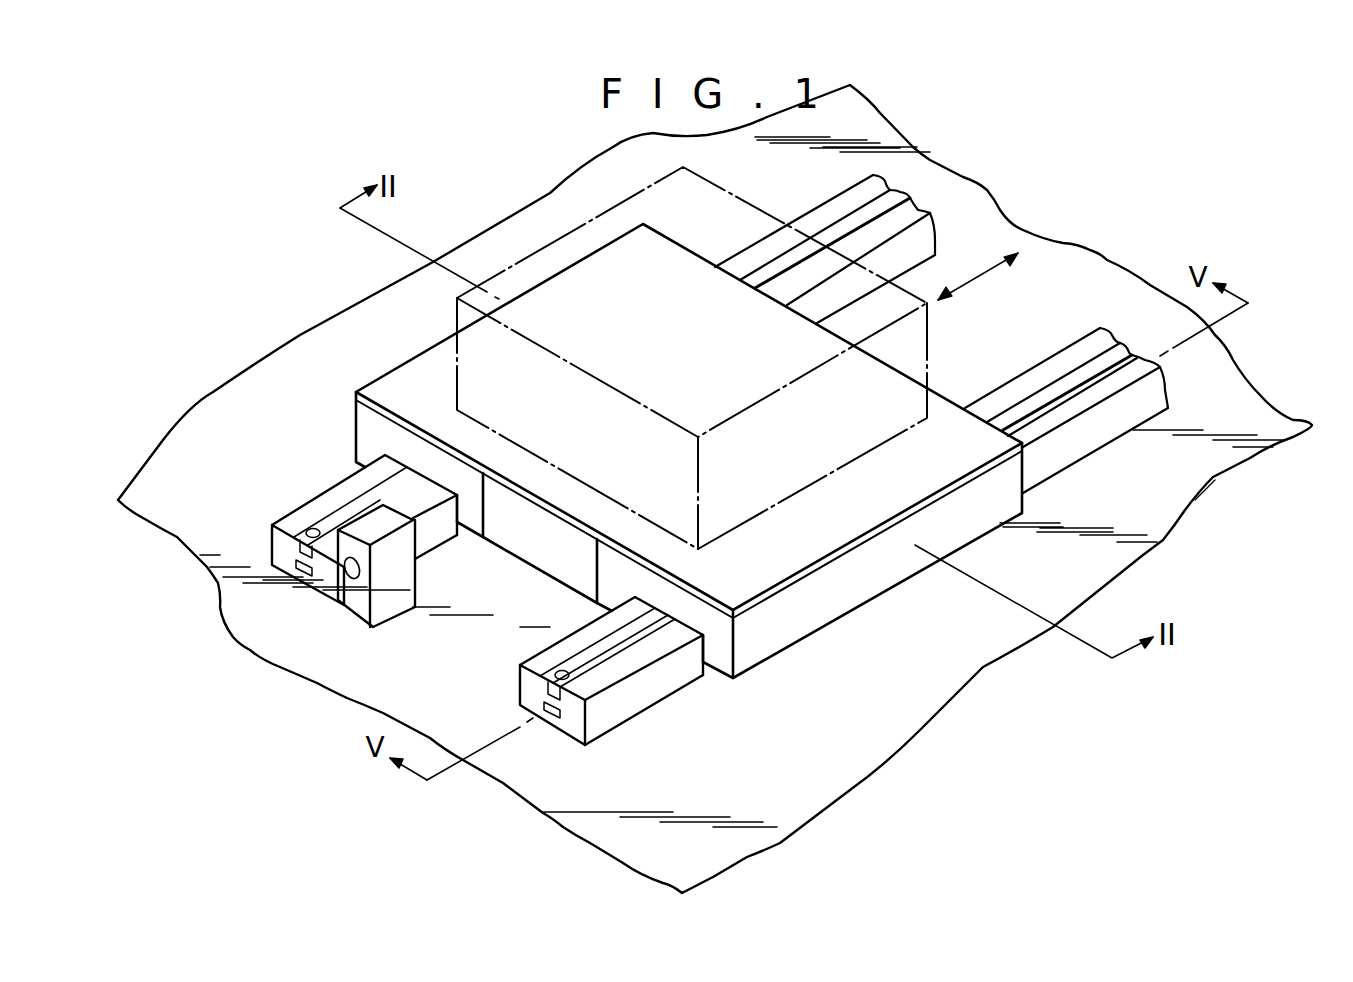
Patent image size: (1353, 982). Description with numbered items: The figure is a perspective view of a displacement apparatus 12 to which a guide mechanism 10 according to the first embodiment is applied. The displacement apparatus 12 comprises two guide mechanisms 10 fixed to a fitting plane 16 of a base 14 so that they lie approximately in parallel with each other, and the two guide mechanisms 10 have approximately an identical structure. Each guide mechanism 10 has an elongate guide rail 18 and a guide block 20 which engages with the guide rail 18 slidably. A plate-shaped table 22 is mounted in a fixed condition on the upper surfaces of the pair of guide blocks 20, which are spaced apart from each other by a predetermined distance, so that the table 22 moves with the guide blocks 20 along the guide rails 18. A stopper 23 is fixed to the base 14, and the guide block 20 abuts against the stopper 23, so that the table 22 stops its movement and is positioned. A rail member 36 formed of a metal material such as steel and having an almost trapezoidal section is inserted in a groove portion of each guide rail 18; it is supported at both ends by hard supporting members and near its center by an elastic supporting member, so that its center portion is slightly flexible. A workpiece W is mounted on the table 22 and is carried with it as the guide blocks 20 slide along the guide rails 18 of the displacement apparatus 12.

The guide mechanism 10 is at (325, 440).
The displacement apparatus 12 is at (993, 138).
The base 14 is at (1236, 400).
The fitting plane 16 is at (1210, 477).
The guide rail 18 is at (290, 522).
The guide block 20 is at (365, 422).
The table 22 is at (853, 518).
The stopper 23 is at (363, 600).
The rail member 36 is at (860, 217).
The workpiece W is at (597, 235).